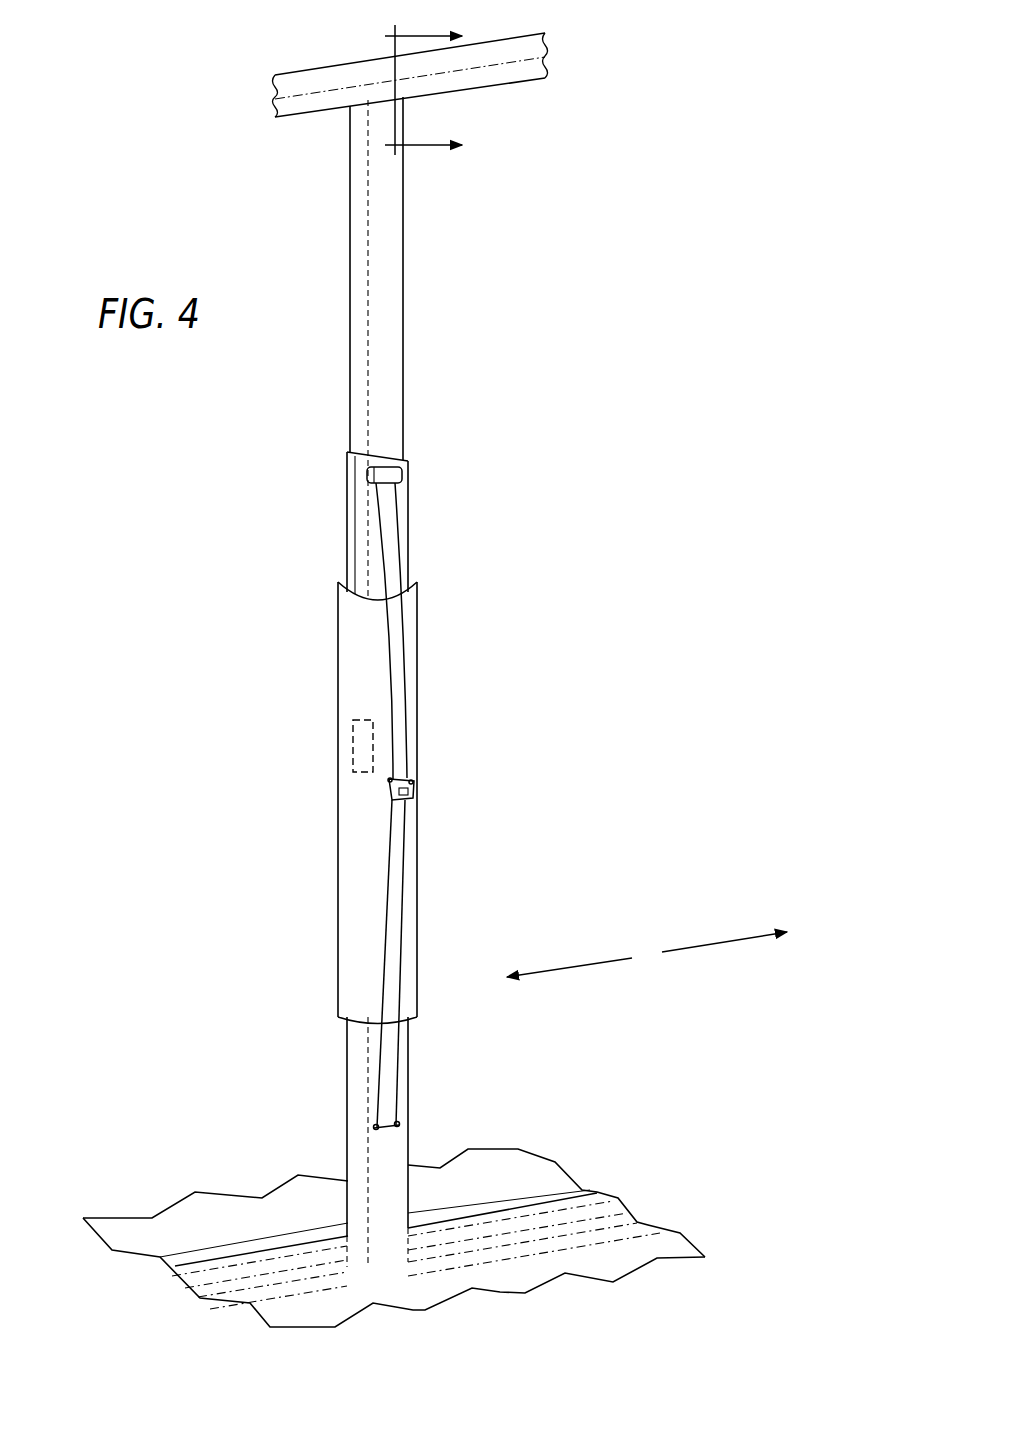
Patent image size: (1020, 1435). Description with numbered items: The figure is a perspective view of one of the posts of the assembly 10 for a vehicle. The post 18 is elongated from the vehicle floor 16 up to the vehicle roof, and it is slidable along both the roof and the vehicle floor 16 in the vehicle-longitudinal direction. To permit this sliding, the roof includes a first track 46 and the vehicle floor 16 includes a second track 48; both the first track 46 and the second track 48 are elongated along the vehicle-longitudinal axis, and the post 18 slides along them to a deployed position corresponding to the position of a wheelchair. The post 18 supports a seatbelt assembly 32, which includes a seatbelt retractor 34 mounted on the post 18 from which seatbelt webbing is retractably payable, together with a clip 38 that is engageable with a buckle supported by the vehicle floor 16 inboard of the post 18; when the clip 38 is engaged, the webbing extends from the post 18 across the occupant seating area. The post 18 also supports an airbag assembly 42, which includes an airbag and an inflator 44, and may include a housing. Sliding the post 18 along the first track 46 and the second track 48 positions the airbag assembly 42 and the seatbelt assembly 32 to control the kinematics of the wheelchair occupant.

The assembly 10 is at (717, 177).
The vehicle floor 16 is at (288, 1210).
The post 18 is at (404, 291).
The seatbelt assembly 32 is at (398, 525).
The seatbelt retractor 34 is at (405, 468).
The clip 38 is at (405, 793).
The airbag assembly 42 is at (337, 650).
The inflator 44 is at (353, 730).
The first track 46 is at (500, 80).
The second track 48 is at (580, 1225).